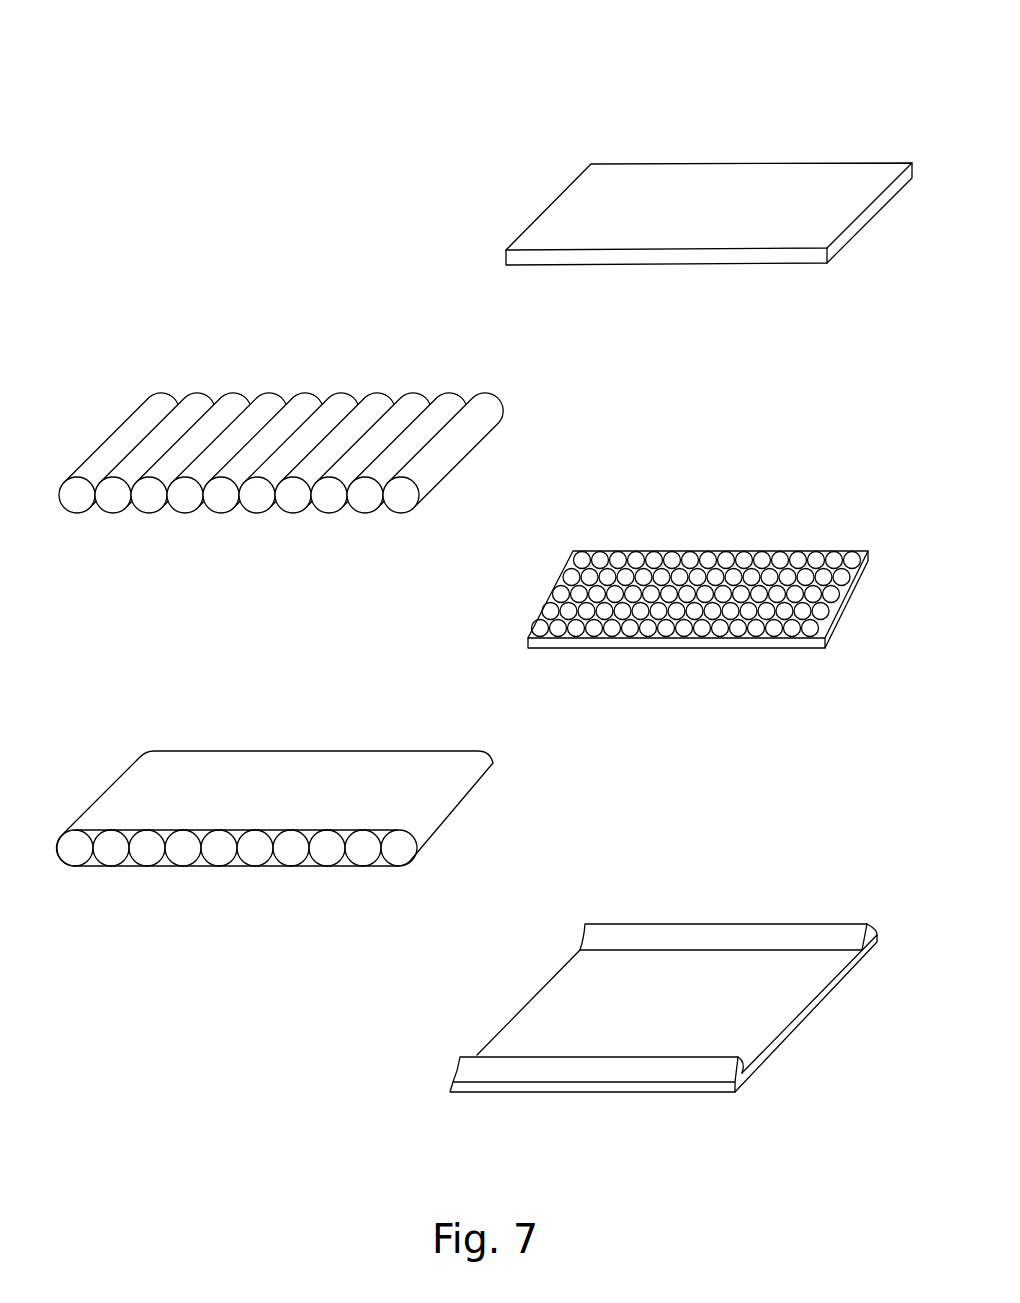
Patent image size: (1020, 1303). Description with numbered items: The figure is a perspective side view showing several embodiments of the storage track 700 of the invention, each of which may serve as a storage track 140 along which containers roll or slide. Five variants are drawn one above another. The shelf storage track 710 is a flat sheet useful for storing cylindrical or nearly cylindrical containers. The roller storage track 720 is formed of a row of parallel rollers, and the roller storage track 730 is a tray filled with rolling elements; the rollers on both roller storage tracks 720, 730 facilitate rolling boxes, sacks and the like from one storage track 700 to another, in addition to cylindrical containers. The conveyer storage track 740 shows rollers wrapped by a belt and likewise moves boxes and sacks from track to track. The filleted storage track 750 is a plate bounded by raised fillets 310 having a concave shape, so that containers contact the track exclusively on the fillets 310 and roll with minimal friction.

The storage track 700 is at (92, 62).
The storage track 140 is at (86, 57).
The shelf storage track 710 is at (661, 163).
The roller storage track 720 is at (197, 392).
The roller storage track 730 is at (657, 551).
The conveyer storage track 740 is at (197, 752).
The filleted storage track 750 is at (678, 925).
The fillet 310 is at (743, 1067).